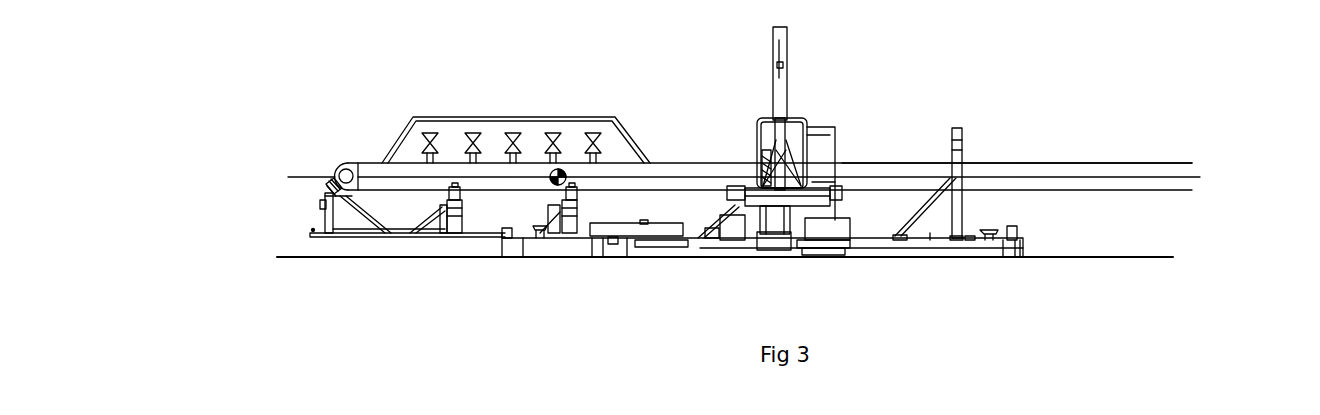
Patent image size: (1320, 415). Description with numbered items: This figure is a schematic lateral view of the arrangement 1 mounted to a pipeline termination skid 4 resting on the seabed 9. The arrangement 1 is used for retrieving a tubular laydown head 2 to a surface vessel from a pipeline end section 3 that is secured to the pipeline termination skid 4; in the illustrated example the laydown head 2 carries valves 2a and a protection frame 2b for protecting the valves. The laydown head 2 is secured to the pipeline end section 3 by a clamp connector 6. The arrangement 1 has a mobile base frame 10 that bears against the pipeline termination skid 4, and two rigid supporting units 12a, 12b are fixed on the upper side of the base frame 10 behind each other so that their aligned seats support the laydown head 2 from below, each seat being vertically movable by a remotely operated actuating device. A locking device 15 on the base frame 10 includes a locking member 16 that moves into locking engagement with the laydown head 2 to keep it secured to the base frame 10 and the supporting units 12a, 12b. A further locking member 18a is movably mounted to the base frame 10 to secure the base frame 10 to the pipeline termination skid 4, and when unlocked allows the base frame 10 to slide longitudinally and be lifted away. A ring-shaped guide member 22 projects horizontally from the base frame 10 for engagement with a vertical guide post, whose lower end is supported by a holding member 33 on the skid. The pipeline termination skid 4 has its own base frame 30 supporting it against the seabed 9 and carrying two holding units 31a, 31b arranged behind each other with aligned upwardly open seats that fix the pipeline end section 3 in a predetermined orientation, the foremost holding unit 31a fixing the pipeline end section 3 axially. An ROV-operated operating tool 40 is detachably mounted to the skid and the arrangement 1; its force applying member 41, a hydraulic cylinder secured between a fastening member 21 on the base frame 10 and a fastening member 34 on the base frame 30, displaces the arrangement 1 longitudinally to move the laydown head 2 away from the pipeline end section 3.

The arrangement 1 is at (365, 244).
The laydown head 2 is at (655, 175).
The valves 2a is at (430, 133).
The protection frame 2b is at (498, 117).
The pipeline end section 3 is at (912, 172).
The pipeline termination skid 4 is at (946, 269).
The clamp connector 6 is at (770, 140).
The seabed 9 is at (296, 256).
The base frame 10 is at (407, 238).
The supporting unit 12a is at (583, 189).
The supporting unit 12b is at (475, 189).
The locking device 15 is at (326, 185).
The locking member 16 is at (352, 171).
The locking member 18a is at (620, 244).
The fastening member 21 is at (737, 166).
The guide member 22 is at (718, 222).
The base frame 30 is at (882, 252).
The holding unit 31a is at (823, 113).
The holding unit 31b is at (958, 122).
The holding member 33 is at (725, 236).
The fastening member 34 is at (823, 173).
The operating tool 40 is at (796, 52).
The force applying member 41 is at (797, 183).